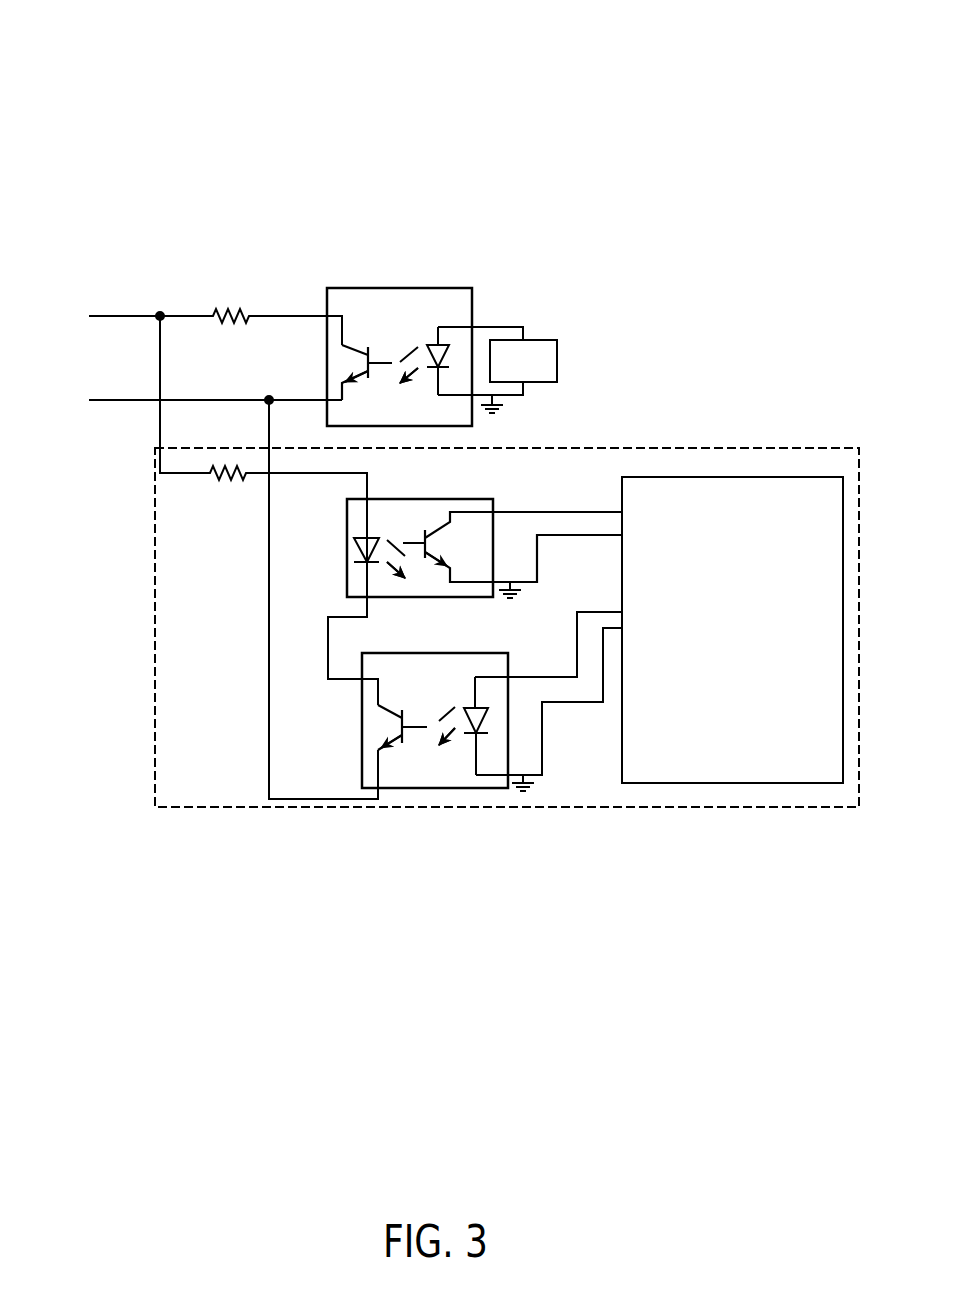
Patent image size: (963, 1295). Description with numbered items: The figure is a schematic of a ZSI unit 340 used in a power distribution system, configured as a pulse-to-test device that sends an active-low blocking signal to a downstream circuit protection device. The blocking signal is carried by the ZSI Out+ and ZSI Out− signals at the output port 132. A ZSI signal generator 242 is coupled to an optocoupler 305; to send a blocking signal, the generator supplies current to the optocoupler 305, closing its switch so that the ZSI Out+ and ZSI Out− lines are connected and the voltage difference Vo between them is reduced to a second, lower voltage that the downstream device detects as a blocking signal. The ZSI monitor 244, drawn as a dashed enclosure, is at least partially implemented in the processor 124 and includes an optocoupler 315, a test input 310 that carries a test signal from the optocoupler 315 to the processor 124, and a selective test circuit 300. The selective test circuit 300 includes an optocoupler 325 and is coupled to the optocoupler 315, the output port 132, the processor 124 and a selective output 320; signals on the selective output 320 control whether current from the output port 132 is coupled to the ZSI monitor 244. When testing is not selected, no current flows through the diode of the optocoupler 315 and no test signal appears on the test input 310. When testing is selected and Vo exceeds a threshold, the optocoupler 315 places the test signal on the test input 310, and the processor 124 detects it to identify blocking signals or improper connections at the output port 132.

The ZSI unit 340 is at (186, 66).
The output port 132 is at (192, 313).
The optocoupler 305 is at (397, 288).
The ZSI signal generator 242 is at (543, 375).
The ZSI monitor 244 is at (155, 627).
The test input 310 is at (559, 512).
The optocoupler 315 is at (347, 537).
The selective output 320 is at (573, 680).
The selective test circuit 300 is at (329, 714).
The optocoupler 325 is at (437, 790).
The processor 124 is at (743, 665).